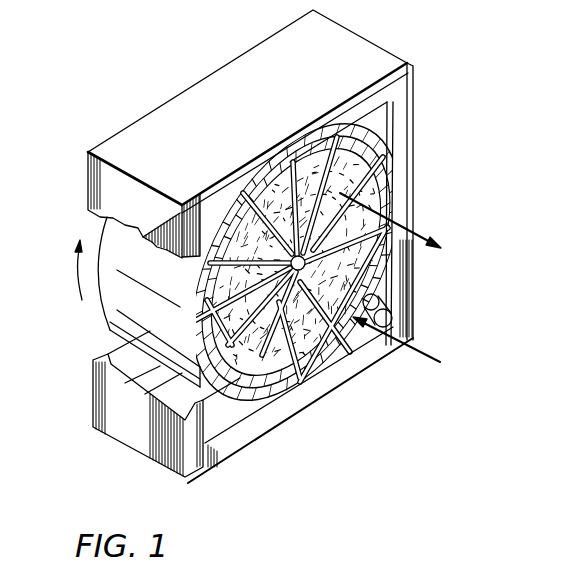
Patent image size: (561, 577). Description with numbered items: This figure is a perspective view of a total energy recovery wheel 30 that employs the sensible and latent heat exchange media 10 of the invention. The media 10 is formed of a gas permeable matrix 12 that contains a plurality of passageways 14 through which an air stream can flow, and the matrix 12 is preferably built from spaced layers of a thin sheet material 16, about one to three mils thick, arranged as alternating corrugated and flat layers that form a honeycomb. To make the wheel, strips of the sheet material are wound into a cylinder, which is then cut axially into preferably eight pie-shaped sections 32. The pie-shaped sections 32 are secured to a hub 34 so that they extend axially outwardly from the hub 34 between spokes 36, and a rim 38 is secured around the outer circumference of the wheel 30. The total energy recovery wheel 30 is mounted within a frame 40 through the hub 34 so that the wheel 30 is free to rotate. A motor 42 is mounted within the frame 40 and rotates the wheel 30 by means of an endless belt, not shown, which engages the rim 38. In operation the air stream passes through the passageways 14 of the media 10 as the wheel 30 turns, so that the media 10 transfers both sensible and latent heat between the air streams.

The sensible and latent heat exchange media 10 is at (395, 171).
The gas permeable matrix 12 is at (377, 194).
The passageways 14 is at (357, 155).
The sheet material 16 is at (368, 292).
The total energy recovery wheel 30 is at (103, 234).
The pie-shaped sections 32 is at (208, 276).
The hub 34 is at (263, 198).
The spokes 36 is at (410, 90).
The rim 38 is at (106, 320).
The frame 40 is at (262, 60).
The motor 42 is at (392, 316).